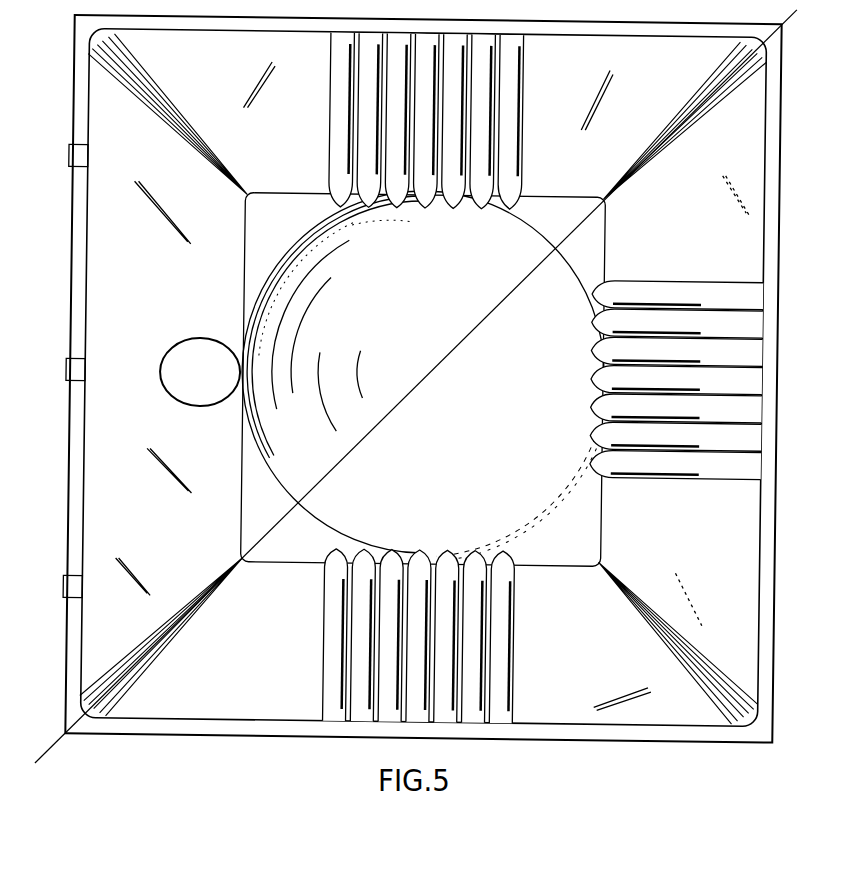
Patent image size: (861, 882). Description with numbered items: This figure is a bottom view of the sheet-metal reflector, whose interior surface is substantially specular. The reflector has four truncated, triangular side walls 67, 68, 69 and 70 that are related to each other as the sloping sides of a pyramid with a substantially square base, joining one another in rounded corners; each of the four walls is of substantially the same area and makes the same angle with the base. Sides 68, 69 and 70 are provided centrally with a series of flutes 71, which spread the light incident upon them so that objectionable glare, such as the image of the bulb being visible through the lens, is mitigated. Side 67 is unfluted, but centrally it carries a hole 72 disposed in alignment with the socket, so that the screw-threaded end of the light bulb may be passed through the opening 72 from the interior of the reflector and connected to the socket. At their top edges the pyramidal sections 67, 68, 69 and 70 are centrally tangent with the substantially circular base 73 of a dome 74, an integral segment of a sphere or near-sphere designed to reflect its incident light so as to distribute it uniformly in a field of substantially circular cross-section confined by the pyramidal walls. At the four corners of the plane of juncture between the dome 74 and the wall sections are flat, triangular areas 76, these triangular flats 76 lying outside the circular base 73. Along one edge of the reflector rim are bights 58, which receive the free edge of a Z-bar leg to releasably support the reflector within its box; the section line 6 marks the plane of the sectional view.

The section line 6- 6 is at (806, 18).
The bights 58 is at (66, 165).
The side wall 67 is at (150, 532).
The side wall 68 is at (286, 682).
The side wall 69 is at (694, 530).
The side wall 70 is at (284, 114).
The flutes 71 is at (507, 203).
The hole 72 is at (186, 342).
The circular base 73 is at (267, 283).
The dome 74 is at (440, 426).
The triangular flats 76 is at (280, 234).